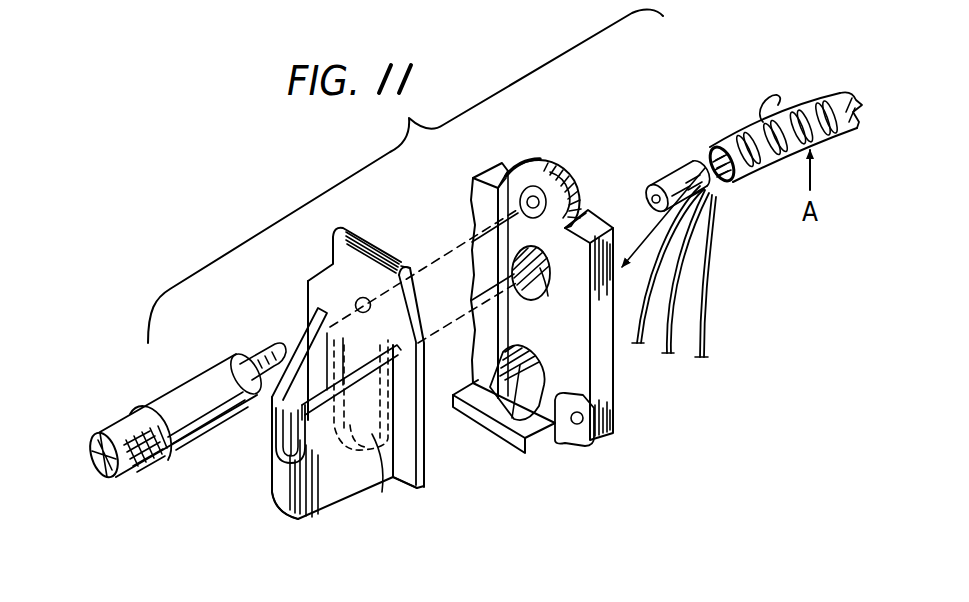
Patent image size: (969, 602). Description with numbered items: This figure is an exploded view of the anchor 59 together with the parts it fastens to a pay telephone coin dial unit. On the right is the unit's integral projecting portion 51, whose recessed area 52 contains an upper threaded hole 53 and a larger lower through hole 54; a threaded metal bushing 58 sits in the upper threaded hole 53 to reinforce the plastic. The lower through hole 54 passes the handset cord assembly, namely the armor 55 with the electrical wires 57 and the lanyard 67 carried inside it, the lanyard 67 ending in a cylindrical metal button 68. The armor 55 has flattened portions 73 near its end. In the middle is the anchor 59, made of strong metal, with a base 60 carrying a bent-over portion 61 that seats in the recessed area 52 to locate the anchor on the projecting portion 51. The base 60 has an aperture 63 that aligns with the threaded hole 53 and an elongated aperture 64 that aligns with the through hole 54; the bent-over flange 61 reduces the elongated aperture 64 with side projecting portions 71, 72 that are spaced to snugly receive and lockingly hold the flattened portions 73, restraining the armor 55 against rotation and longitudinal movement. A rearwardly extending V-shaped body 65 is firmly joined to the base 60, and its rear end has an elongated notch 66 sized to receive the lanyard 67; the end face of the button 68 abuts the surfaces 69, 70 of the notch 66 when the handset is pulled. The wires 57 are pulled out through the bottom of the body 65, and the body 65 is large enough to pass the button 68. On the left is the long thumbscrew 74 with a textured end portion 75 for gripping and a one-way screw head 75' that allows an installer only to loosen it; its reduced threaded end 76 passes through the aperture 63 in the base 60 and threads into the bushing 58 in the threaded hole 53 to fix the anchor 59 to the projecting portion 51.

The projecting portion 51 is at (598, 440).
The recessed area 52 is at (590, 211).
The upper threaded hole 53 is at (528, 187).
The lower through hole 54 is at (545, 300).
The armor 55 is at (830, 100).
The electrical wires 57 is at (660, 230).
The threaded metal bushing 58 is at (541, 197).
The anchor 59 is at (424, 489).
The base 60 is at (424, 448).
The bent-over portion 61 is at (418, 292).
The aperture 63 is at (358, 301).
The elongated aperture 64 is at (382, 492).
The V-shaped body 65 is at (298, 518).
The elongated notch 66 is at (276, 452).
The lanyard 67 is at (705, 165).
The cylindrical metal button 68 is at (670, 184).
The surface of notch 69 is at (272, 418).
The surface of notch 70 is at (306, 433).
The side projecting portion 71 is at (377, 452).
The side projecting portion 72 is at (361, 395).
The flattened portions 73 is at (775, 96).
The long thumbscrew 74 is at (182, 393).
The textured end portion 75 is at (133, 420).
The one-way screw head 75' is at (88, 468).
The reduced threaded end 76 is at (253, 356).